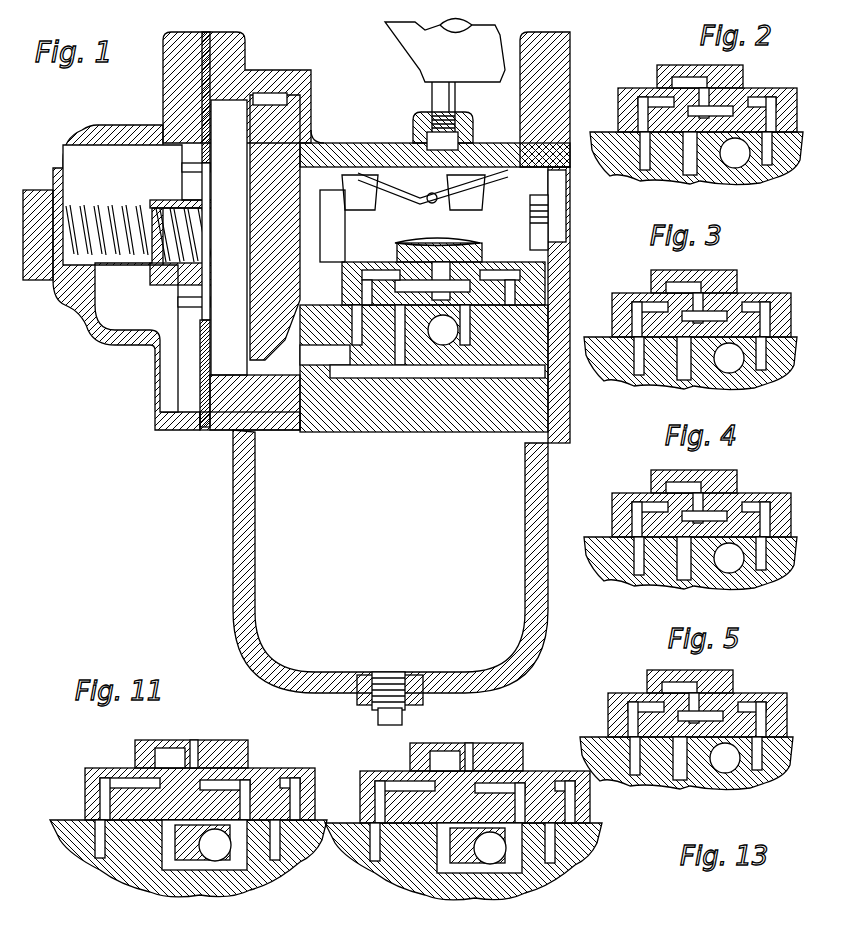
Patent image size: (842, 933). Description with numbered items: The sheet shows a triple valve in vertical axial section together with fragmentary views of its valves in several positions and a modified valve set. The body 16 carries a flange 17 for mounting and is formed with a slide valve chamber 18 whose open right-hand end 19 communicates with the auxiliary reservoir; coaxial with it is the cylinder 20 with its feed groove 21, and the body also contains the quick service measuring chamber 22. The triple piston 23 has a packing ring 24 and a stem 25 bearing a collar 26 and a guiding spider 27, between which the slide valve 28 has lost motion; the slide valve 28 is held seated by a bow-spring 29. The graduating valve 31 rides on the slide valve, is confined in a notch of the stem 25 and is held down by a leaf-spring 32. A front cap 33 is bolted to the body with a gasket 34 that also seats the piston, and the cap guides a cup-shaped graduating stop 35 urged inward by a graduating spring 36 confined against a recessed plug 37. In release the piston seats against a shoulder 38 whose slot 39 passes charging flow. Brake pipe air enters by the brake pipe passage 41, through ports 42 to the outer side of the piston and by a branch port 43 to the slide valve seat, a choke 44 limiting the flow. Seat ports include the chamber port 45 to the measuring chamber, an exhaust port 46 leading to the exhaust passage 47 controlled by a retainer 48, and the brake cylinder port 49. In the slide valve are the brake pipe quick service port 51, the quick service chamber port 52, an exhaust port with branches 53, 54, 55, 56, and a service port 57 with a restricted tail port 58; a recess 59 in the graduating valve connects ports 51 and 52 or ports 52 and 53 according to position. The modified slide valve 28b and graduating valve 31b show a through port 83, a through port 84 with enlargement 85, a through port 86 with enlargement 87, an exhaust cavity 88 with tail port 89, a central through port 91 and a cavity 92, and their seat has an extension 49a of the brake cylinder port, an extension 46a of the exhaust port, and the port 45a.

In FIG. 1, the body 16 is at (365, 148).
In FIG. 1, the flange 17 is at (530, 78).
In FIG. 1, the slide valve chamber 18 is at (320, 190).
In FIG. 1, the open end of slide valve chamber 19 is at (566, 208).
In FIG. 1, the cylinder 20 is at (225, 112).
In FIG. 1, the feed groove 21 is at (285, 93).
In FIG. 1, the quick service measuring chamber 22 is at (363, 526).
In FIG. 1, the triple piston 23 is at (255, 312).
In FIG. 1, the packing ring 24 is at (208, 430).
In FIG. 1, the stem 25 is at (360, 219).
In FIG. 1, the collar 26 is at (335, 243).
In FIG. 1, the guiding spider 27 is at (548, 243).
In FIG. 1, the slide valve 28 is at (520, 292).
In FIG. 2, the slide valve 28 is at (797, 90).
In FIG. 3, the slide valve 28 is at (780, 300).
In FIG. 4, the slide valve 28 is at (775, 500).
In FIG. 5, the slide valve 28 is at (780, 720).
In FIG. 1, the bow-spring 29 is at (465, 165).
In FIG. 1, the graduating valve 31 is at (482, 252).
In FIG. 2, the graduating valve 31 is at (710, 60).
In FIG. 3, the graduating valve 31 is at (728, 282).
In FIG. 4, the graduating valve 31 is at (655, 476).
In FIG. 5, the graduating valve 31 is at (660, 678).
In FIG. 1, the leaf-spring 32 is at (415, 242).
In FIG. 1, the front cap 33 is at (112, 345).
In FIG. 1, the gasket 34 is at (230, 58).
In FIG. 1, the graduating stop 35 is at (218, 203).
In FIG. 1, the graduating spring 36 is at (110, 215).
In FIG. 1, the recessed plug 37 is at (38, 192).
In FIG. 1, the shoulder 38 is at (285, 412).
In FIG. 1, the slot 39 is at (312, 135).
In FIG. 1, the brake pipe passage 41 is at (498, 378).
In FIG. 1, the ports 42 is at (182, 168).
In FIG. 1, the branch port 43 is at (353, 345).
In FIG. 2, the branch port 43 is at (644, 160).
In FIG. 3, the branch port 43 is at (639, 365).
In FIG. 4, the branch port 43 is at (638, 560).
In FIG. 5, the branch port 43 is at (638, 760).
In FIG. 1, the choke 44 is at (548, 375).
In FIG. 3, the choke 44 is at (586, 375).
In FIG. 1, the chamber port 45 is at (400, 365).
In FIG. 2, the chamber port 45 is at (688, 165).
In FIG. 3, the chamber port 45 is at (688, 370).
In FIG. 4, the chamber port 45 is at (688, 565).
In FIG. 5, the chamber port 45 is at (682, 765).
In FIG. 1, the exhaust port 46 is at (445, 345).
In FIG. 2, the exhaust port 46 is at (745, 165).
In FIG. 3, the exhaust port 46 is at (745, 372).
In FIG. 4, the exhaust port 46 is at (745, 570).
In FIG. 5, the exhaust port 46 is at (740, 770).
In FIG. 11, the exhaust port 46 is at (203, 843).
In FIG. 13, the exhaust port 46 is at (560, 828).
In FIG. 1, the exhaust passage 47 is at (430, 138).
In FIG. 2, the exhaust passage 47 is at (732, 165).
In FIG. 3, the exhaust passage 47 is at (735, 370).
In FIG. 4, the exhaust passage 47 is at (735, 575).
In FIG. 5, the exhaust passage 47 is at (728, 775).
In FIG. 11, the exhaust passage 47 is at (238, 870).
In FIG. 13, the exhaust passage 47 is at (540, 868).
In FIG. 1, the retainer 48 is at (418, 57).
In FIG. 1, the brake cylinder port 49 is at (492, 345).
In FIG. 2, the brake cylinder port 49 is at (775, 165).
In FIG. 3, the brake cylinder port 49 is at (770, 355).
In FIG. 4, the brake cylinder port 49 is at (770, 555).
In FIG. 5, the brake cylinder port 49 is at (765, 755).
In FIG. 11, the brake cylinder port 49 is at (275, 855).
In FIG. 13, the brake cylinder port 49 is at (610, 832).
In FIG. 2, the brake pipe quick service port 51 is at (618, 112).
In FIG. 3, the brake pipe quick service port 51 is at (612, 318).
In FIG. 4, the brake pipe quick service port 51 is at (612, 518).
In FIG. 5, the brake pipe quick service port 51 is at (608, 720).
In FIG. 2, the quick service chamber port 52 is at (690, 78).
In FIG. 3, the quick service chamber port 52 is at (680, 282).
In FIG. 4, the quick service chamber port 52 is at (688, 482).
In FIG. 5, the quick service chamber port 52 is at (690, 682).
In FIG. 2, the exhaust port branch 53 is at (745, 95).
In FIG. 3, the exhaust port branch 53 is at (740, 298).
In FIG. 4, the exhaust port branch 53 is at (740, 492).
In FIG. 5, the exhaust port branch 53 is at (735, 680).
In FIG. 2, the exhaust port branch 54 is at (660, 130).
In FIG. 3, the exhaust port branch 54 is at (664, 340).
In FIG. 4, the exhaust port branch 54 is at (660, 540).
In FIG. 5, the exhaust port branch 54 is at (658, 740).
In FIG. 2, the exhaust port branch 55 is at (714, 165).
In FIG. 3, the exhaust port branch 55 is at (712, 380).
In FIG. 4, the exhaust port branch 55 is at (710, 575).
In FIG. 5, the exhaust port branch 55 is at (700, 775).
In FIG. 2, the exhaust port branch 56 is at (770, 150).
In FIG. 3, the exhaust port branch 56 is at (766, 325).
In FIG. 4, the exhaust port branch 56 is at (766, 522).
In FIG. 5, the exhaust port branch 56 is at (775, 700).
In FIG. 2, the service port 57 is at (765, 100).
In FIG. 3, the service port 57 is at (782, 308).
In FIG. 4, the service port 57 is at (782, 505).
In FIG. 5, the service port 57 is at (765, 700).
In FIG. 11, the service port 57 is at (290, 778).
In FIG. 13, the service port 57 is at (565, 782).
In FIG. 2, the tail port 58 is at (760, 95).
In FIG. 3, the tail port 58 is at (752, 300).
In FIG. 4, the tail port 58 is at (748, 496).
In FIG. 5, the tail port 58 is at (745, 700).
In FIG. 11, the tail port 58 is at (262, 778).
In FIG. 13, the tail port 58 is at (536, 775).
In FIG. 2, the recess 59 is at (672, 80).
In FIG. 3, the recess 59 is at (666, 285).
In FIG. 4, the recess 59 is at (656, 486).
In FIG. 5, the recess 59 is at (660, 688).
In FIG. 11, the through port 83 is at (88, 795).
In FIG. 13, the through port 83 is at (375, 775).
In FIG. 11, the through port 84 is at (125, 785).
In FIG. 13, the through port 84 is at (405, 775).
In FIG. 11, the longitudinal enlargement 85 is at (85, 790).
In FIG. 13, the longitudinal enlargement 85 is at (395, 840).
In FIG. 11, the through port 86 is at (235, 750).
In FIG. 13, the through port 86 is at (500, 755).
In FIG. 11, the longitudinal enlargement 87 is at (193, 810).
In FIG. 13, the longitudinal enlargement 87 is at (440, 875).
In FIG. 11, the exhaust cavity 88 is at (262, 808).
In FIG. 13, the exhaust cavity 88 is at (535, 808).
In FIG. 11, the tail port 89 is at (237, 810).
In FIG. 13, the tail port 89 is at (510, 808).
In FIG. 11, the central through port 91 is at (190, 745).
In FIG. 13, the central through port 91 is at (462, 750).
In FIG. 11, the cavity 92 is at (220, 750).
In FIG. 13, the cavity 92 is at (482, 752).
In FIG. 11, the graduating valve 31b is at (248, 756).
In FIG. 13, the graduating valve 31b is at (525, 752).
In FIG. 11, the slide valve 28b is at (310, 780).
In FIG. 13, the slide valve 28b is at (578, 800).
In FIG. 11, the port 45a is at (100, 855).
In FIG. 13, the port 45a is at (412, 860).
In FIG. 11, the extension of exhaust port 46a is at (200, 865).
In FIG. 13, the extension of exhaust port 46a is at (535, 840).
In FIG. 11, the extension of brake cylinder port 49a is at (160, 860).
In FIG. 13, the extension of brake cylinder port 49a is at (465, 880).